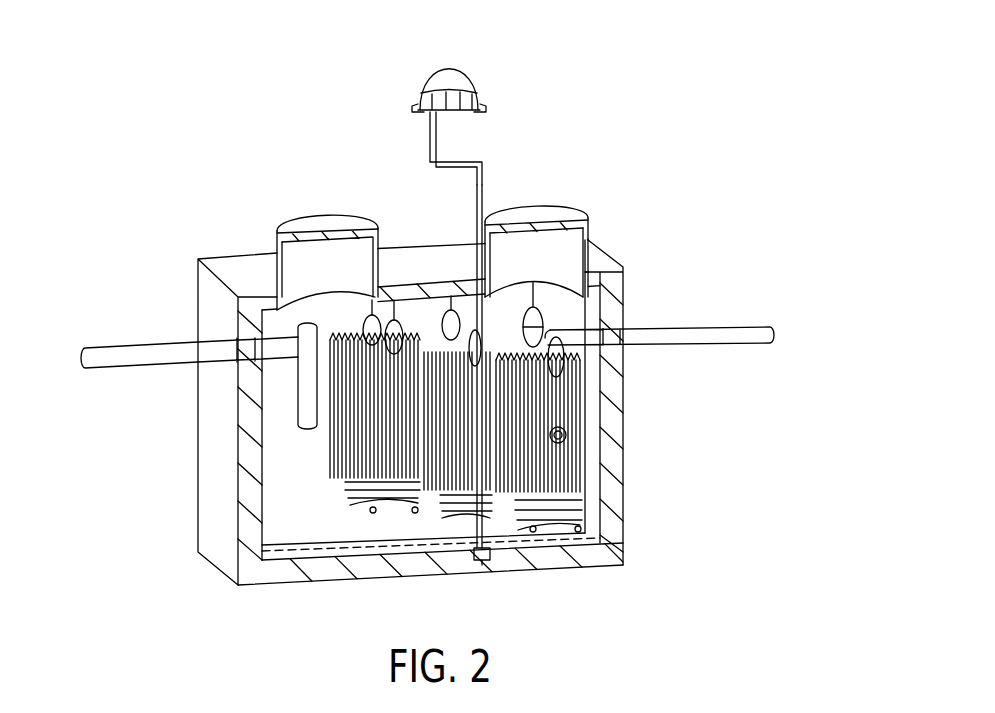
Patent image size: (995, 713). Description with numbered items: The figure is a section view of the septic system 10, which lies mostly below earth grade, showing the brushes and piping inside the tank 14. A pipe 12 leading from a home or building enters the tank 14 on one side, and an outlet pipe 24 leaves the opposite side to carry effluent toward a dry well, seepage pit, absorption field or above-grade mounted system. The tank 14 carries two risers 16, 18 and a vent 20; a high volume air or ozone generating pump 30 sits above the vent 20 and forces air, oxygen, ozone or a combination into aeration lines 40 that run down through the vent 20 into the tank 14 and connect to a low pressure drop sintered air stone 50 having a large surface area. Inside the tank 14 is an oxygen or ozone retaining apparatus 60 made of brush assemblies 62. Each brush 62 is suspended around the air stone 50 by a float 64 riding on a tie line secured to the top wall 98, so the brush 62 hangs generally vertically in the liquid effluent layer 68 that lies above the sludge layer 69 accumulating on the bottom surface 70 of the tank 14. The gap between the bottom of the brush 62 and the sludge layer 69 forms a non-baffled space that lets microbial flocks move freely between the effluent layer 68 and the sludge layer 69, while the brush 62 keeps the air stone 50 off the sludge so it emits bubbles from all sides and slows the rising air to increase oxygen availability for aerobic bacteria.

The septic system 10 is at (648, 80).
The pipe 12 is at (100, 358).
The tank 14 is at (218, 280).
The riser 16 is at (333, 220).
The riser 18 is at (554, 212).
The vent 20 is at (485, 186).
The outlet pipe 24 is at (705, 338).
The air pump 30 is at (463, 82).
The aeration lines 40 is at (455, 162).
The air stone 50 is at (484, 552).
The oxygen or ozone retaining apparatus 60 is at (400, 530).
The brush 62 is at (575, 503).
The float 64 is at (545, 318).
The effluent layer 68 is at (277, 435).
The sludge layer 69 is at (318, 570).
The bottom surface 70 is at (255, 568).
The top wall 98 is at (437, 292).